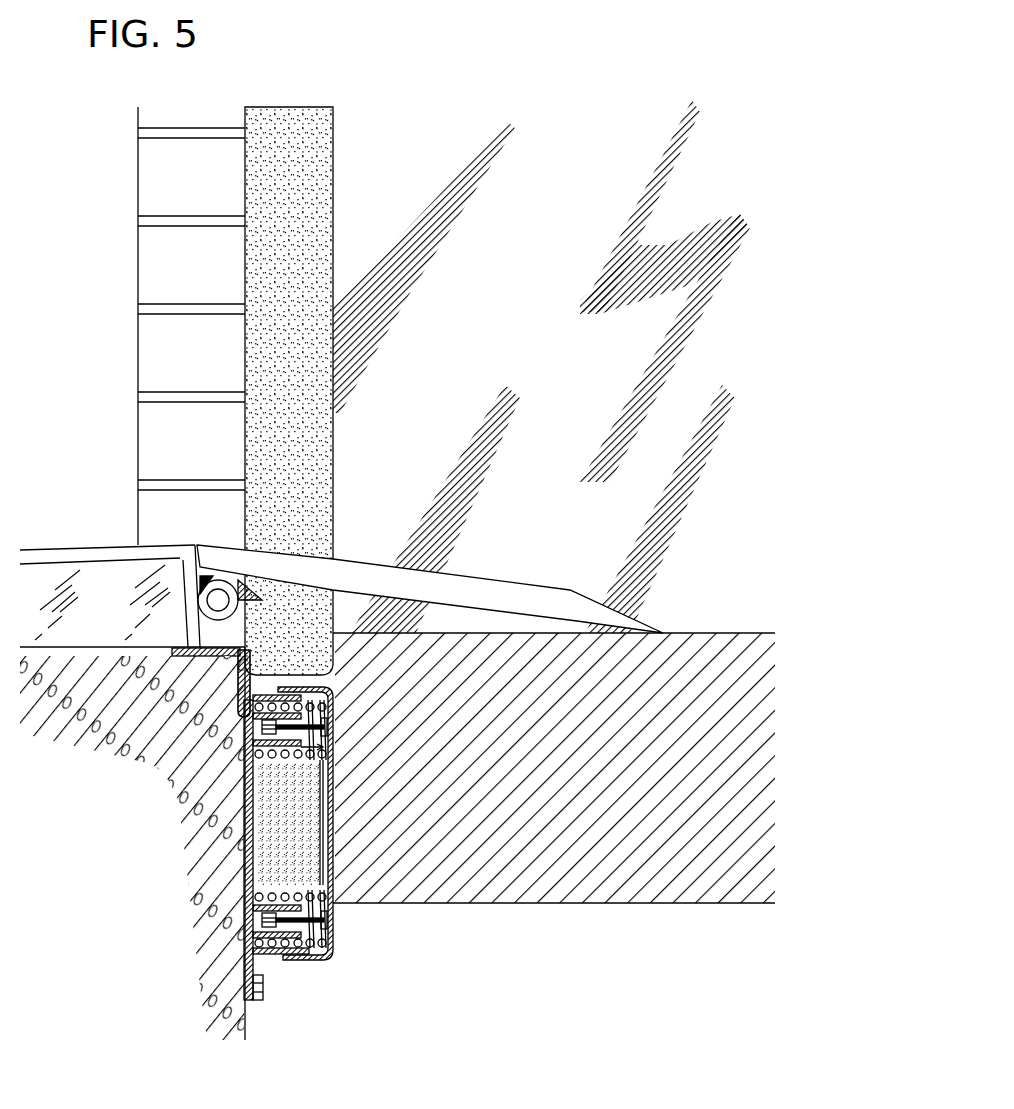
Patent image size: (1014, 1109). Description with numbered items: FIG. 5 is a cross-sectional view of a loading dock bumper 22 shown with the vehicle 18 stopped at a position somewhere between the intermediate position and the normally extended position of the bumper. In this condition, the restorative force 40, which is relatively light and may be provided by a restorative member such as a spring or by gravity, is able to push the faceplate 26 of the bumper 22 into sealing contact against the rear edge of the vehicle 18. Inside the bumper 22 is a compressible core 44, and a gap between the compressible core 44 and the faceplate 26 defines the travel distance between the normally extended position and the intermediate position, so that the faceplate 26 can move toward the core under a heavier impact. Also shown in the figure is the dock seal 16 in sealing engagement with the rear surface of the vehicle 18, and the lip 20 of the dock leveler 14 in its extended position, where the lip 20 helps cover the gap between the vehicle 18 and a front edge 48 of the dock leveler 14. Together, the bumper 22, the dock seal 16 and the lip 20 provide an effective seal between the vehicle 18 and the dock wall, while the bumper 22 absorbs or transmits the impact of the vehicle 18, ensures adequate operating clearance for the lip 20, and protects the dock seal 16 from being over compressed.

The dock leveler 14 is at (117, 545).
The dock seal 16 is at (333, 203).
The vehicle 18 is at (485, 903).
The lip 20 is at (493, 580).
The bumper 22 is at (325, 852).
The faceplate 26 is at (338, 908).
The restorative force 40 is at (312, 750).
The compressible core 44 is at (305, 820).
The front edge 48 is at (199, 545).